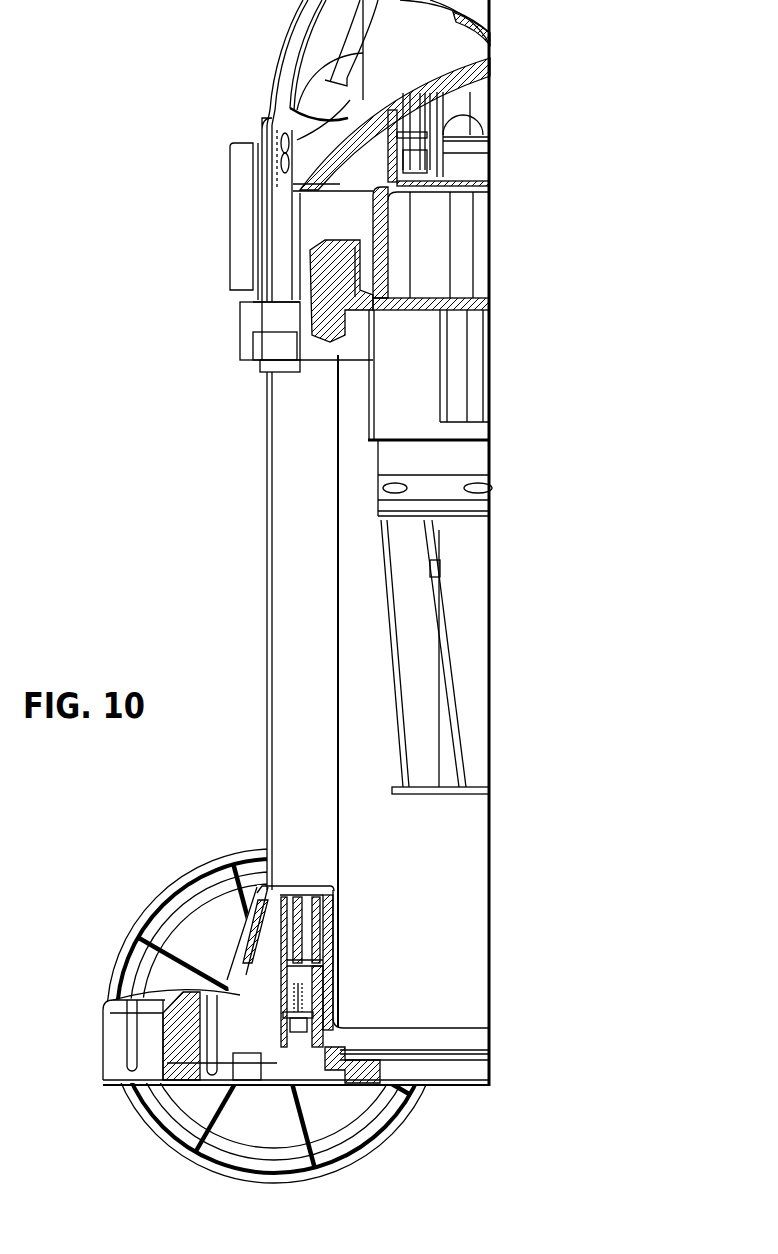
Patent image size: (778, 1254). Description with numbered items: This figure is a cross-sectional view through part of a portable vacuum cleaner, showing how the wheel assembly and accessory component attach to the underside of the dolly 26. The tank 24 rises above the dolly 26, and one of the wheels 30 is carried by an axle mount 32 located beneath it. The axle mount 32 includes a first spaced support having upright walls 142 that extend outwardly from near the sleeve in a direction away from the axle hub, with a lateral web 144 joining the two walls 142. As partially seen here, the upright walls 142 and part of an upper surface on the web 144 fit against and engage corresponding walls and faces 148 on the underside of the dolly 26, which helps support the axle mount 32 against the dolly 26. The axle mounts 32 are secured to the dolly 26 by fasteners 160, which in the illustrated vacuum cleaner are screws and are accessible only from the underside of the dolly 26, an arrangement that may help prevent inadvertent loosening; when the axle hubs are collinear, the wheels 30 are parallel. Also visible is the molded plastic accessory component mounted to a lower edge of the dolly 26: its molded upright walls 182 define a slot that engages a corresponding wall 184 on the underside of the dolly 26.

The tank 24 is at (300, 486).
The dolly 26 is at (243, 930).
The wheels 30 is at (190, 900).
The axle mounts 32 is at (205, 975).
The upright walls 142 is at (197, 983).
The lateral web 144 is at (335, 963).
The walls and faces 148 is at (265, 852).
The fasteners 160 is at (303, 1060).
The upright walls 182 is at (205, 1005).
The wall 184 is at (255, 1000).